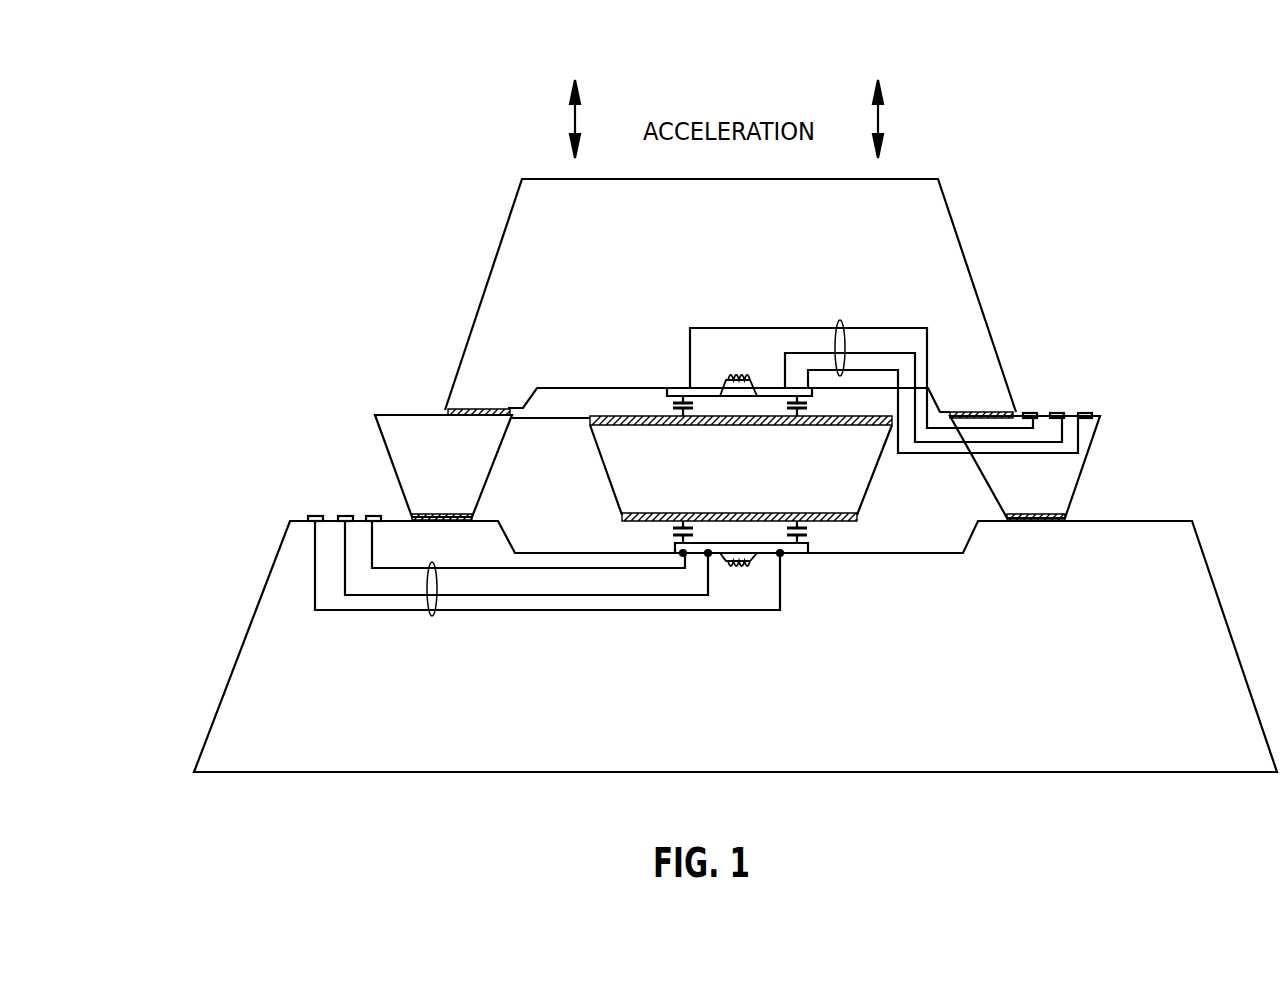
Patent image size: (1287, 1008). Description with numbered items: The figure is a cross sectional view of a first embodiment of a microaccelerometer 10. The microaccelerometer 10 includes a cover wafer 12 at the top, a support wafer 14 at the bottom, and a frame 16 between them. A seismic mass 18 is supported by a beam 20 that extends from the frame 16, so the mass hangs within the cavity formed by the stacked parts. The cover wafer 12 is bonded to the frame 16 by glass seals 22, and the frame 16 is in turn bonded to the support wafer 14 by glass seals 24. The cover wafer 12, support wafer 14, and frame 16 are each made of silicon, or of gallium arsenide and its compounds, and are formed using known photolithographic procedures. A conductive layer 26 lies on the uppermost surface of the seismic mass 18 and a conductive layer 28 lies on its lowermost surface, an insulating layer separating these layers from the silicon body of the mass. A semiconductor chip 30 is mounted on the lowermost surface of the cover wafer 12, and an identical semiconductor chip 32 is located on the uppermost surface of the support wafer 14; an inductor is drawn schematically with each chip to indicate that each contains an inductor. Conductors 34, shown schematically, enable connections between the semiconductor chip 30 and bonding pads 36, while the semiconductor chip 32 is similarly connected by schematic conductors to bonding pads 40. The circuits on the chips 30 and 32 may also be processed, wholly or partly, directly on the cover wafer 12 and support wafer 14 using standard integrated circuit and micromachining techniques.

The microaccelerometer 10 is at (1129, 277).
The cover wafer 12 is at (742, 264).
The support wafer 14 is at (716, 697).
The frame 16 is at (453, 460).
The seismic mass 18 is at (687, 475).
The beam 20 is at (537, 421).
The glass seals 22 is at (472, 406).
The glass seals 24 is at (447, 513).
The conductive layer 26 is at (742, 425).
The conductive layer 28 is at (823, 513).
The semiconductor chip 30 is at (680, 387).
The semiconductor chip 32 is at (790, 557).
The conductors 34 is at (840, 320).
The bonding pads 36 is at (1110, 382).
The bonding pads 40 is at (385, 489).